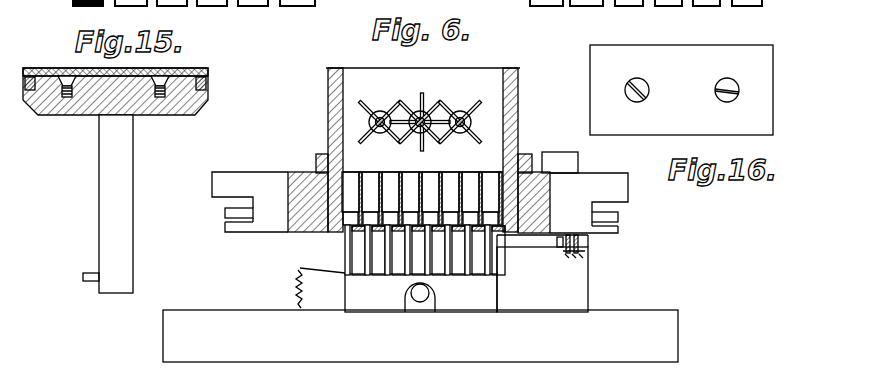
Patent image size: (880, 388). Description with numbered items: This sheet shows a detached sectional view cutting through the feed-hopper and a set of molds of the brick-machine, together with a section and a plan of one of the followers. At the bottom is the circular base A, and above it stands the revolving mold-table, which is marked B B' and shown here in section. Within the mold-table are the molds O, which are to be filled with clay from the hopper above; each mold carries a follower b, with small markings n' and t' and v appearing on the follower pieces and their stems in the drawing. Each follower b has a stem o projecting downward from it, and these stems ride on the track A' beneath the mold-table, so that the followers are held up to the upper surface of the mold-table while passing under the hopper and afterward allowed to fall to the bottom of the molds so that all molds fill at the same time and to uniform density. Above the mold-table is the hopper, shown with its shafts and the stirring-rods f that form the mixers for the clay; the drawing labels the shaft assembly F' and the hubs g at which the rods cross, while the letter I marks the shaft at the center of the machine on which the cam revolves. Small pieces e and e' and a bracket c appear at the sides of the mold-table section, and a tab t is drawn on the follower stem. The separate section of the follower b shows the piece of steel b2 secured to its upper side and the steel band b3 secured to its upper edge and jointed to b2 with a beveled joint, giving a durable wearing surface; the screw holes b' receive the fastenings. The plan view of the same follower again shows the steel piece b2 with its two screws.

In FIG. 6, the circular base A is at (420, 336).
In FIG. 6, the track A' is at (542, 273).
In FIG. 6, the mold-table B is at (419, 202).
In FIG. 6, the circular revolving mold-table B' is at (420, 202).
In FIG. 6, the tongue e is at (420, 214).
In FIG. 6, the lip e' is at (420, 224).
In FIG. 6, the shaft F' is at (447, 150).
In FIG. 6, the stirring-rods f is at (419, 120).
In FIG. 6, the wheels g is at (419, 121).
In FIG. 6, the molds O is at (423, 223).
In FIG. 6, the cylinder marks n' is at (431, 200).
In FIG. 15, the followers b is at (110, 91).
In FIG. 6, the followers b is at (419, 220).
In FIG. 15, the screw holes b' is at (120, 78).
In FIG. 15, the piece of steel b2 is at (35, 74).
In FIG. 16, the piece of steel b2 is at (681, 90).
In FIG. 15, the steel band b3 is at (210, 81).
In FIG. 15, the stem o is at (116, 204).
In FIG. 15, the tab t is at (85, 275).
In FIG. 6, the part of automatic device t' is at (426, 236).
In FIG. 6, the stems v is at (417, 252).
In FIG. 6, the shaft I is at (421, 293).
In FIG. 6, the bracket c is at (571, 246).